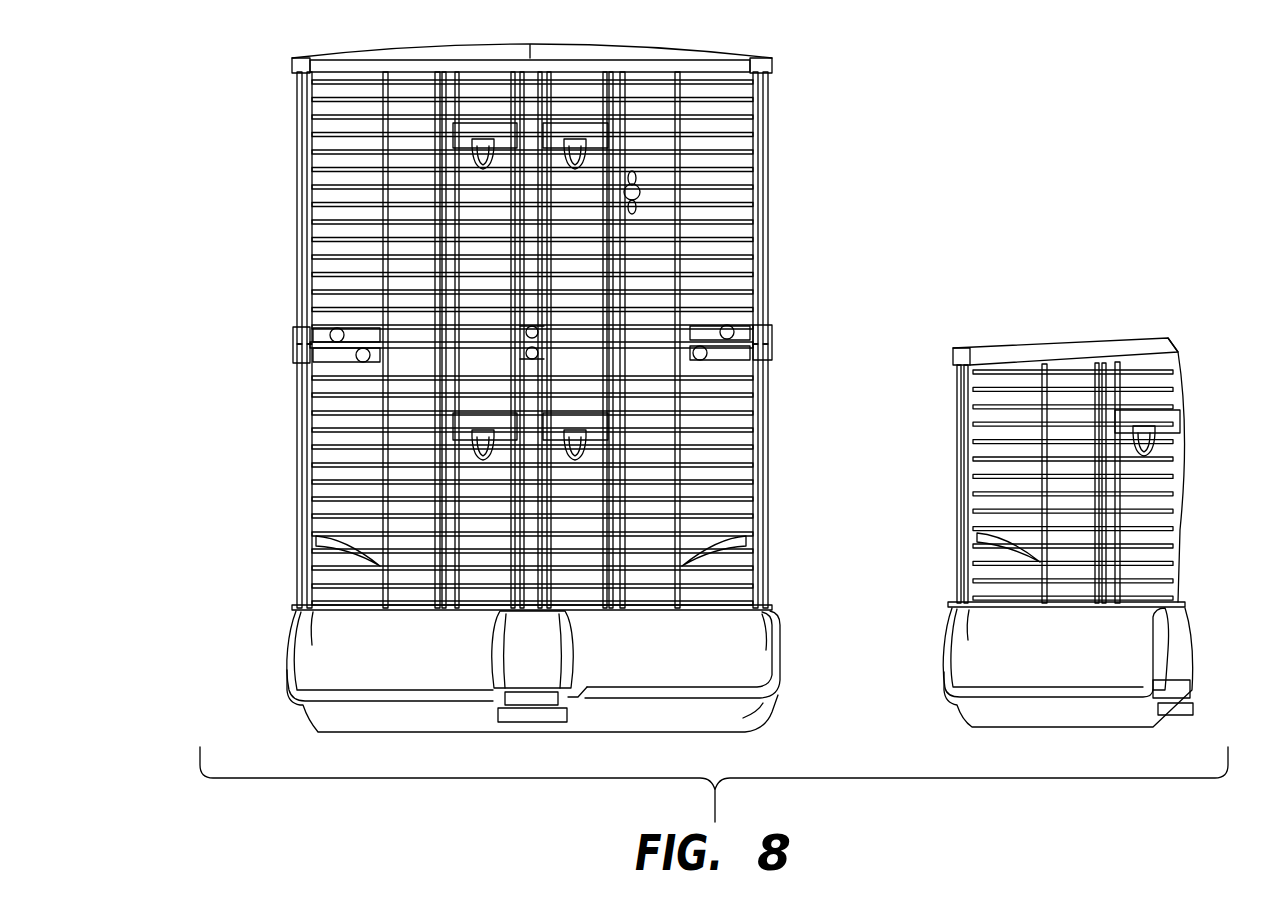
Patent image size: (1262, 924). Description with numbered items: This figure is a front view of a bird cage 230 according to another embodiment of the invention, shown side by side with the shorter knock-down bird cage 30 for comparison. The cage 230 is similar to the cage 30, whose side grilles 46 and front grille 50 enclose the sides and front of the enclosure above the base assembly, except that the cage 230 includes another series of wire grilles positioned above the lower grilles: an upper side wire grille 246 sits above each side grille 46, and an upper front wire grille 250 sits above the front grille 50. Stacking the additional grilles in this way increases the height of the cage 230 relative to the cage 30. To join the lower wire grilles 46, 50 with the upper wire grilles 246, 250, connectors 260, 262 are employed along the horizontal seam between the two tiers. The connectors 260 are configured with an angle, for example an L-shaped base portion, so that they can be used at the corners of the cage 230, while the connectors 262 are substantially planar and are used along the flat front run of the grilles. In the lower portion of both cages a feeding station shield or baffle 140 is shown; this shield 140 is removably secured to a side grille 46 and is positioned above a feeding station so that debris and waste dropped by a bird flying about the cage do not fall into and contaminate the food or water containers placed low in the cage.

The bird cage 230 is at (162, 110).
The upper side wire grille 246 is at (297, 118).
The upper front wire grille 250 is at (332, 183).
The angled connector 260 is at (293, 334).
The planar connector 262 is at (550, 328).
The side grille 46 is at (297, 413).
The front grille 50 is at (332, 493).
The feeding station shield 140 is at (316, 566).
The bird cage 30 is at (1140, 337).